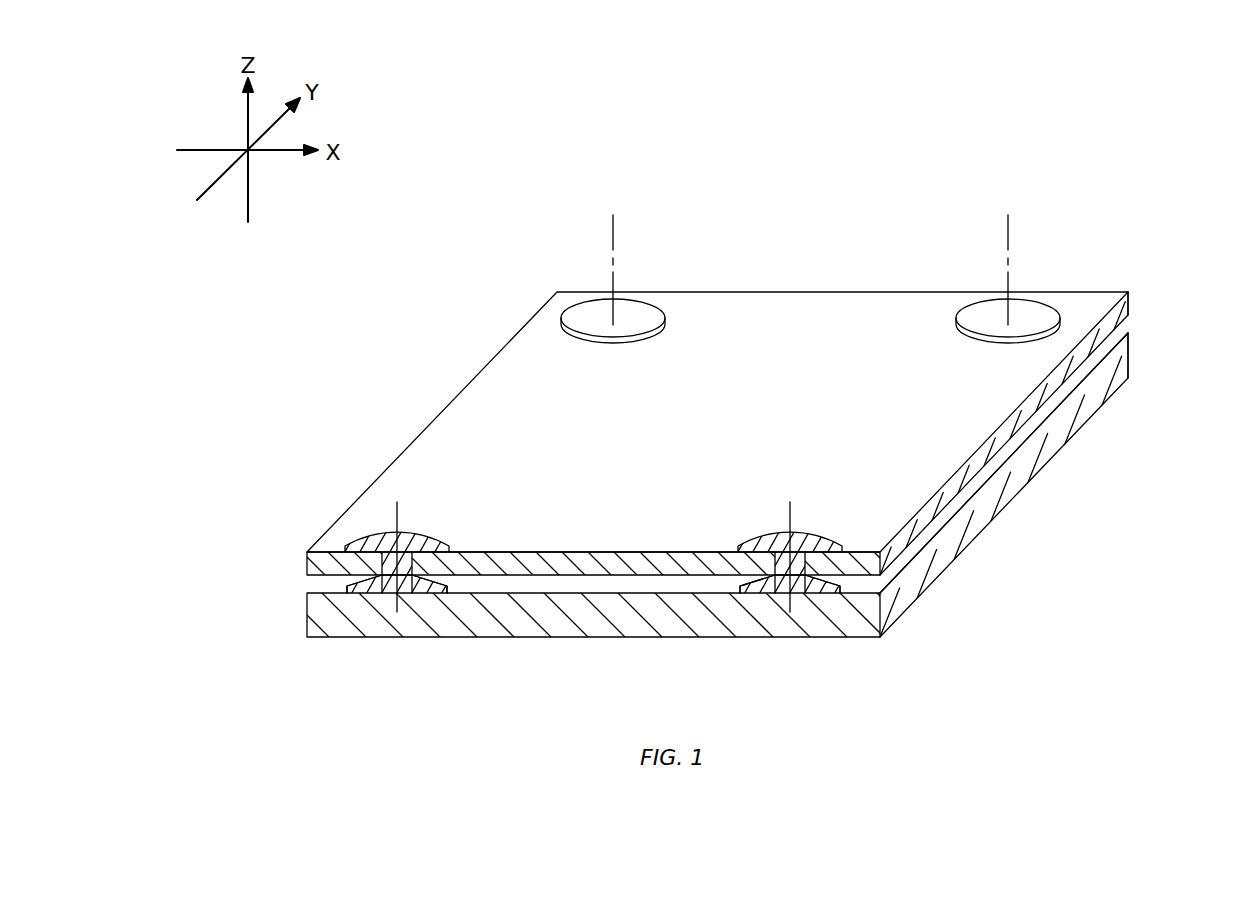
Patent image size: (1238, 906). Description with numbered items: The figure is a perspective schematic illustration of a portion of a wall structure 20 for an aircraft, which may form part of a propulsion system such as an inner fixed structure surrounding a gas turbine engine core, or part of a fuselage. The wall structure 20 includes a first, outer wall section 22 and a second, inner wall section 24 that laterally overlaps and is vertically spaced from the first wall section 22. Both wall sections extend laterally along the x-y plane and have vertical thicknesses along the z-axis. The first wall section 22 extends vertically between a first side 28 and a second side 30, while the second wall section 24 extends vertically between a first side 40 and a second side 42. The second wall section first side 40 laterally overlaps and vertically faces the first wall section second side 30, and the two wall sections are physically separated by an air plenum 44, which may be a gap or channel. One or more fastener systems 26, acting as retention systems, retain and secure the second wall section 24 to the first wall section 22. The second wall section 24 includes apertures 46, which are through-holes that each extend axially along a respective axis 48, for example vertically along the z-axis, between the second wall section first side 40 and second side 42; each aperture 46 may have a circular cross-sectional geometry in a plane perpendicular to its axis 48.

The wall structure 20 is at (478, 236).
The first wall section 22 is at (292, 626).
The second wall section 24 is at (292, 556).
The fastener system 26 is at (590, 292).
The first side of the first wall section 28 is at (1120, 387).
The second side of the first wall section 30 is at (1114, 328).
The first side of the second wall section 40 is at (1078, 368).
The second side of the second wall section 42 is at (1094, 308).
The air plenum 44 is at (992, 481).
The aperture 46 is at (446, 588).
The axis 48 is at (625, 246).